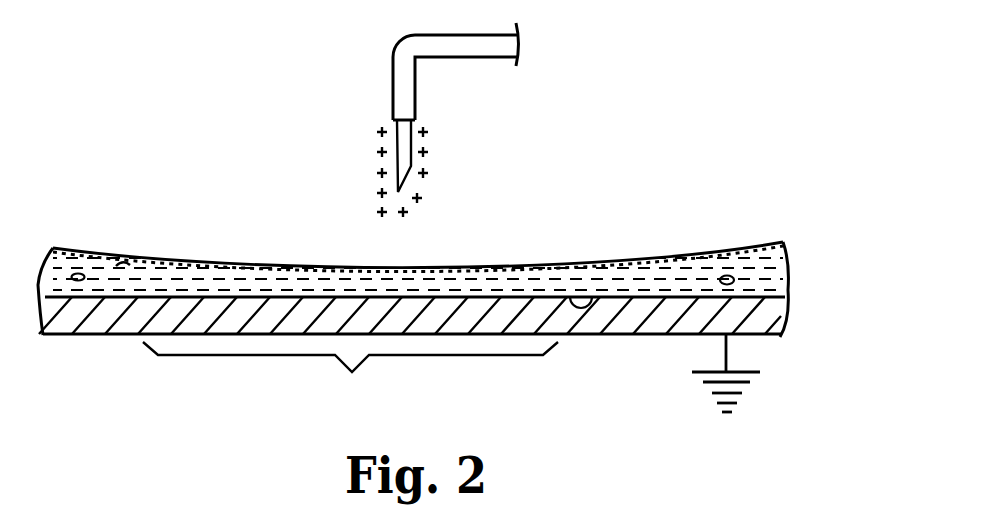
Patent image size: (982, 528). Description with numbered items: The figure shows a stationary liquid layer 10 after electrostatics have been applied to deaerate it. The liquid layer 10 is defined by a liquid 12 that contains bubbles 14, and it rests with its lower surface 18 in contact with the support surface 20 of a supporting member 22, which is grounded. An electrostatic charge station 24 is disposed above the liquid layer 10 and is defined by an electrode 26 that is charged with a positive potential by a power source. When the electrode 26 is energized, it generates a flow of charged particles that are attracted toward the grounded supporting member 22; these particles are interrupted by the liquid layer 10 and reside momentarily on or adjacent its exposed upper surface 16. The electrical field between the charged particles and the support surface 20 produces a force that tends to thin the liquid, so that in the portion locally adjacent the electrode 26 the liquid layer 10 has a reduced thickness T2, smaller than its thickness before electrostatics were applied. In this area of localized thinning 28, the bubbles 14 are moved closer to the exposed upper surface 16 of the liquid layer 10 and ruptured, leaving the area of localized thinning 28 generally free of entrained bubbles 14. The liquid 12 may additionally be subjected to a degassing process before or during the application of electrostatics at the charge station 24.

The liquid layer 10 is at (461, 305).
The liquid 12 is at (676, 276).
The bubbles 14 is at (80, 273).
The exposed upper surface 16 is at (535, 265).
The lower surface 18 is at (592, 300).
The support surface 20 is at (640, 298).
The supporting member 22 is at (796, 322).
The electrostatic charge station 24 is at (390, 120).
The electrode 26 is at (413, 156).
The area of localized thinning 28 is at (350, 376).
The thickness T2 is at (280, 347).